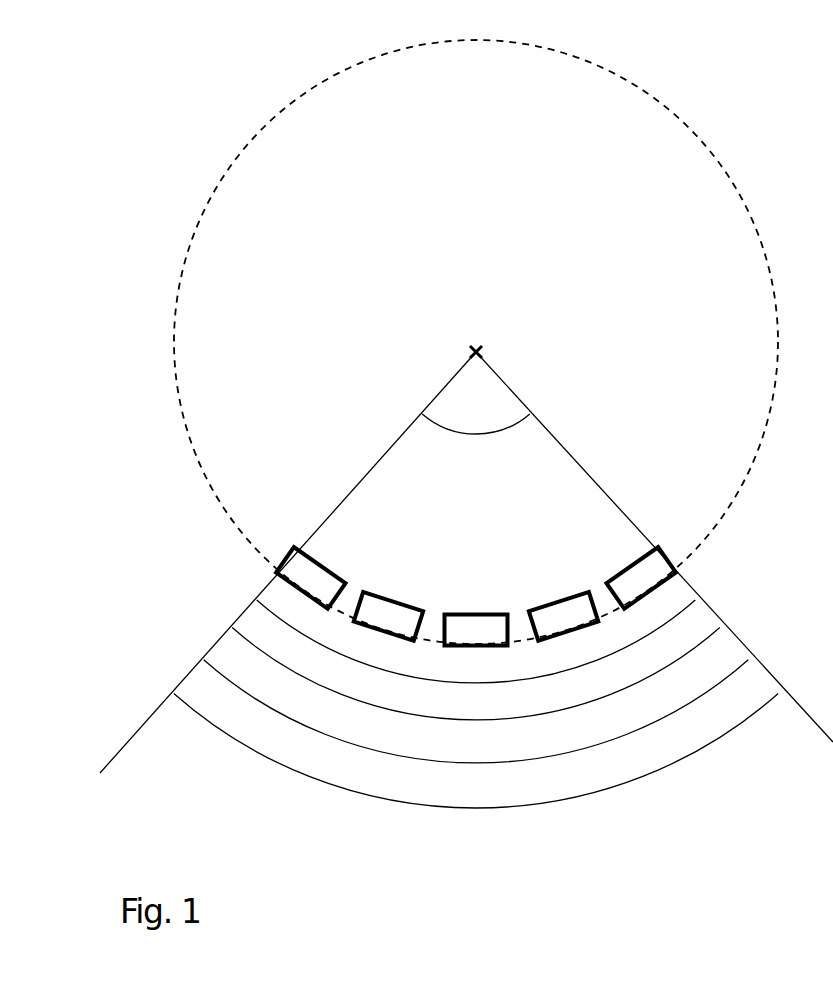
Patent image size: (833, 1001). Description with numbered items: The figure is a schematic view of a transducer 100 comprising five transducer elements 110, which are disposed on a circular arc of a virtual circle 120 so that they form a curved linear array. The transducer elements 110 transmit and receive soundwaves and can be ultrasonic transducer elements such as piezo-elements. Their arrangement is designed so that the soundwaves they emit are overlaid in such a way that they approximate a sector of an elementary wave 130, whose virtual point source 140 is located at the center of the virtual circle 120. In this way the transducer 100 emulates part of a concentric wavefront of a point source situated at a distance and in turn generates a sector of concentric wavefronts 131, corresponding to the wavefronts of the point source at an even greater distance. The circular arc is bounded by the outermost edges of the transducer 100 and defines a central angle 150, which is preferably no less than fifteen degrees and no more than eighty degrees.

The transducer 100 is at (473, 547).
The transducer elements 110 is at (477, 599).
The virtual circle 120 is at (705, 110).
The elementary wave 130 is at (752, 626).
The concentric wavefronts 131 is at (650, 733).
The virtual point source 140 is at (500, 327).
The central angle 150 is at (506, 408).